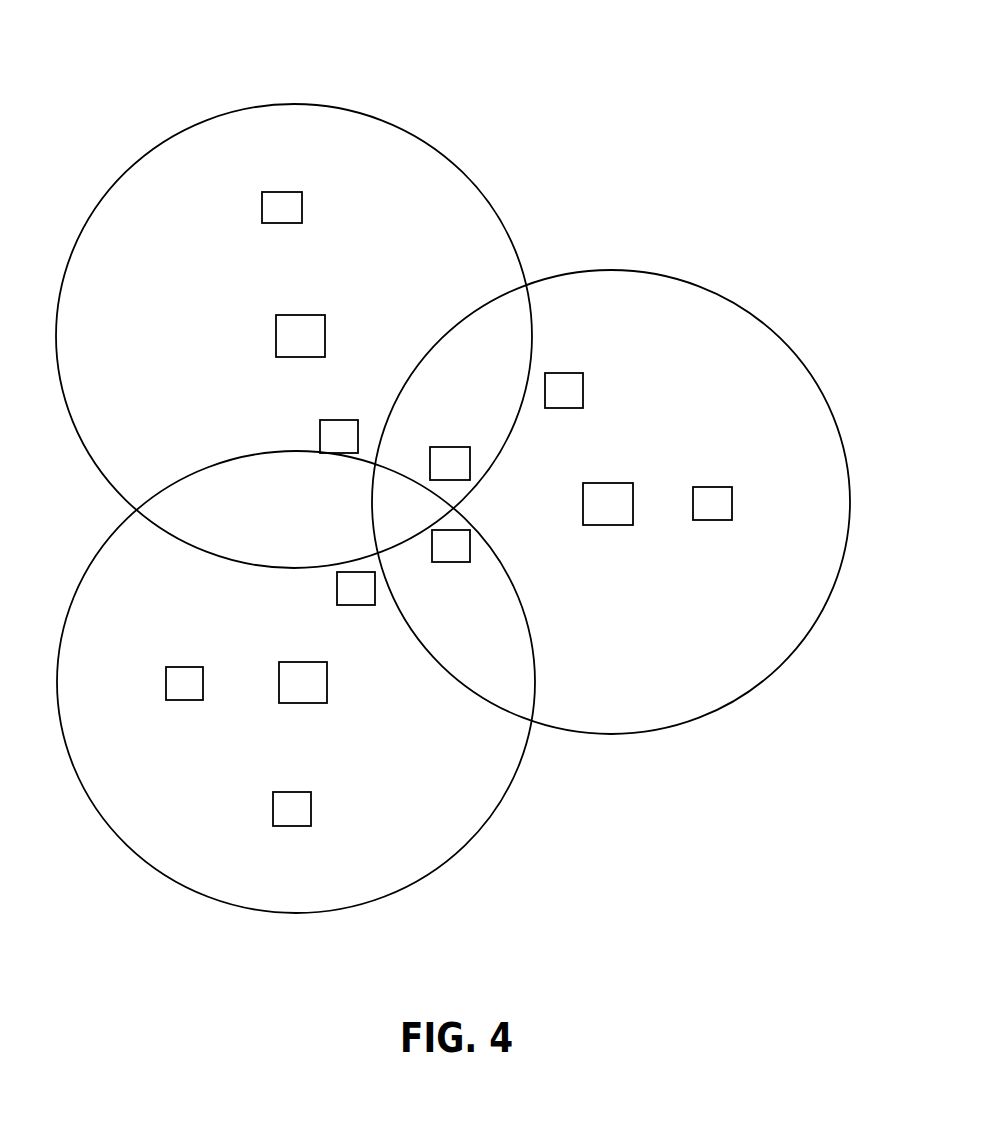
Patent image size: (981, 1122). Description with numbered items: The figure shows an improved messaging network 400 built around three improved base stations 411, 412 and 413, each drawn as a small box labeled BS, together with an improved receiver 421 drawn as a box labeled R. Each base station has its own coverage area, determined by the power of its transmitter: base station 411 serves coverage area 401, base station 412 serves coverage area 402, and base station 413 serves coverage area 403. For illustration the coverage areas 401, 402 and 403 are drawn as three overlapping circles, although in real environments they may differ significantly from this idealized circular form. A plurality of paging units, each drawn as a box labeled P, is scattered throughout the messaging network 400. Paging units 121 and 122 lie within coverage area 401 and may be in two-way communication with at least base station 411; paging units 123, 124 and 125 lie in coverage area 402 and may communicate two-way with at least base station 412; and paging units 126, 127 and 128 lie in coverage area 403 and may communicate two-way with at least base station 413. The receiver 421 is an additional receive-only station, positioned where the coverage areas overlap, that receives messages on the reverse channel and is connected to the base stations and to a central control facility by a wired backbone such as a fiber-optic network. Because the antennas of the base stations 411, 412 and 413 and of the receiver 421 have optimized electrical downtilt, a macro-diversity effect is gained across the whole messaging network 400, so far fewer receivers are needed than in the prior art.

The messaging network 400 is at (638, 143).
The coverage area 401 is at (292, 103).
The coverage area 402 is at (612, 735).
The coverage area 403 is at (302, 915).
The base station 411 is at (276, 335).
The base station 412 is at (583, 502).
The base station 413 is at (305, 703).
The receiver 421 is at (453, 447).
The paging unit 121 is at (343, 420).
The paging unit 122 is at (262, 207).
The paging unit 123 is at (583, 390).
The paging unit 124 is at (717, 487).
The paging unit 125 is at (450, 562).
The paging unit 126 is at (358, 605).
The paging unit 127 is at (311, 808).
The paging unit 128 is at (188, 667).